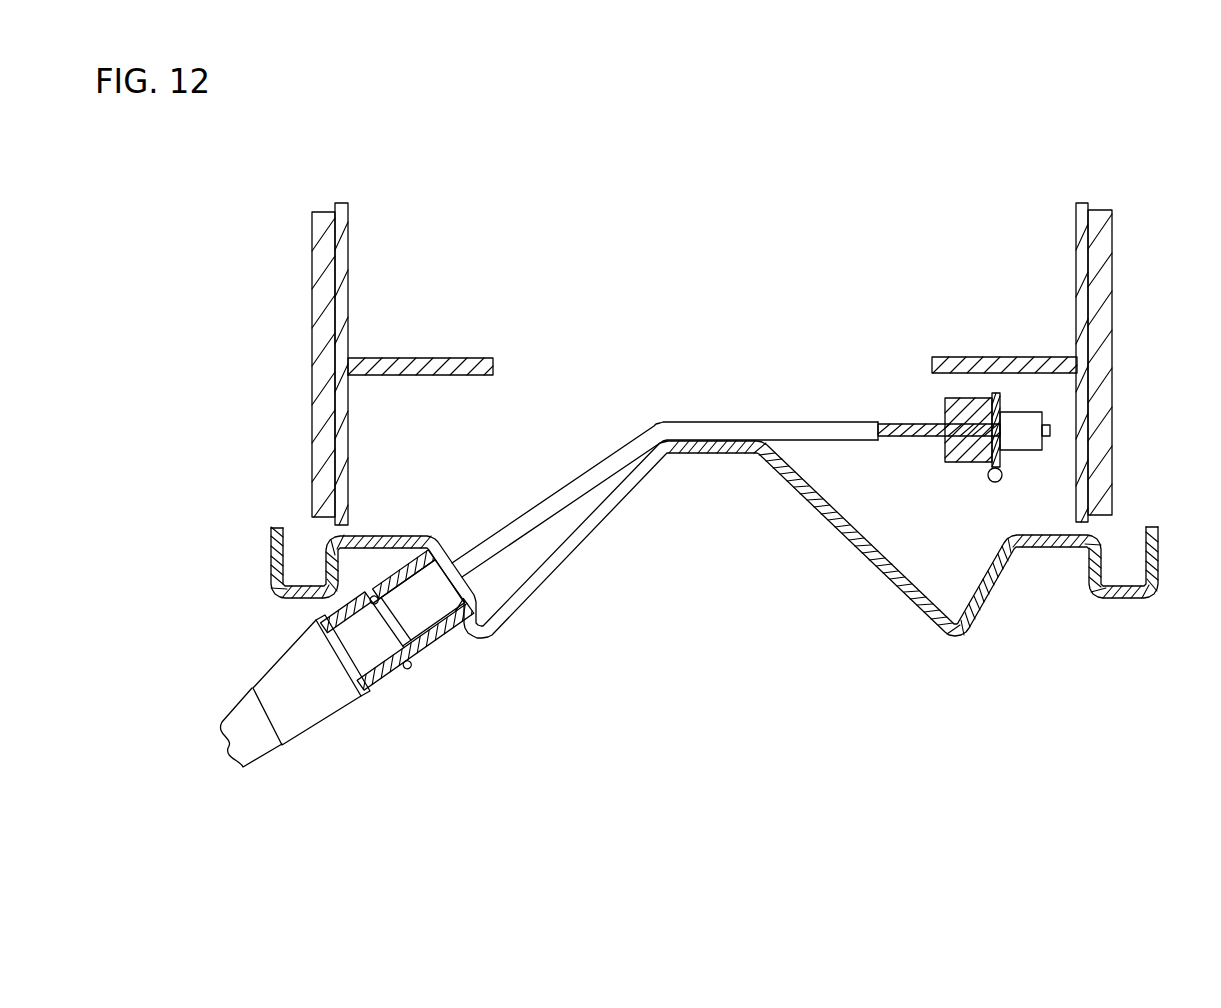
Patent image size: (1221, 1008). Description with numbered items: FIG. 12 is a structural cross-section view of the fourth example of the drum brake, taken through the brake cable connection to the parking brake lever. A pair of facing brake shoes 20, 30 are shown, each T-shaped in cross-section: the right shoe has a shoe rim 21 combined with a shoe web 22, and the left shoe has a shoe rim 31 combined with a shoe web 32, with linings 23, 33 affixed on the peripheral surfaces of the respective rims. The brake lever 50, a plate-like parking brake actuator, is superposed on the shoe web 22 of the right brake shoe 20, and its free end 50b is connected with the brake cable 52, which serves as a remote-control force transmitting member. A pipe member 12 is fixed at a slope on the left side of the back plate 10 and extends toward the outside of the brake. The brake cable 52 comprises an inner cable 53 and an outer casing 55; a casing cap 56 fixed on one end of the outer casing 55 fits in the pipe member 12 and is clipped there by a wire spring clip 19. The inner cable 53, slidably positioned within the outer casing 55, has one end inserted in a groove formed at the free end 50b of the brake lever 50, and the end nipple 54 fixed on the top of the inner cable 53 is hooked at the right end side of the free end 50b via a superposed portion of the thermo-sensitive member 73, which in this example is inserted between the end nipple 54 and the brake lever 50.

The back plate 10 is at (958, 650).
The pipe member 12 is at (432, 646).
The wire spring clip 19 is at (409, 668).
The brake shoe 20 is at (1069, 331).
The shoe rim 21 is at (1080, 203).
The shoe web 22 is at (990, 357).
The lining 23 is at (1112, 245).
The brake shoe 30 is at (356, 334).
The shoe rim 31 is at (341, 203).
The shoe web 32 is at (423, 358).
The lining 33 is at (312, 247).
The brake lever 50 is at (921, 433).
The free end 50b is at (943, 410).
The brake cable 52 is at (718, 418).
The inner cable 53 is at (825, 422).
The end nipple 54 is at (1018, 452).
The outer casing 55 is at (252, 748).
The casing cap 56 is at (369, 648).
The thermo-sensitive member 73 is at (995, 483).